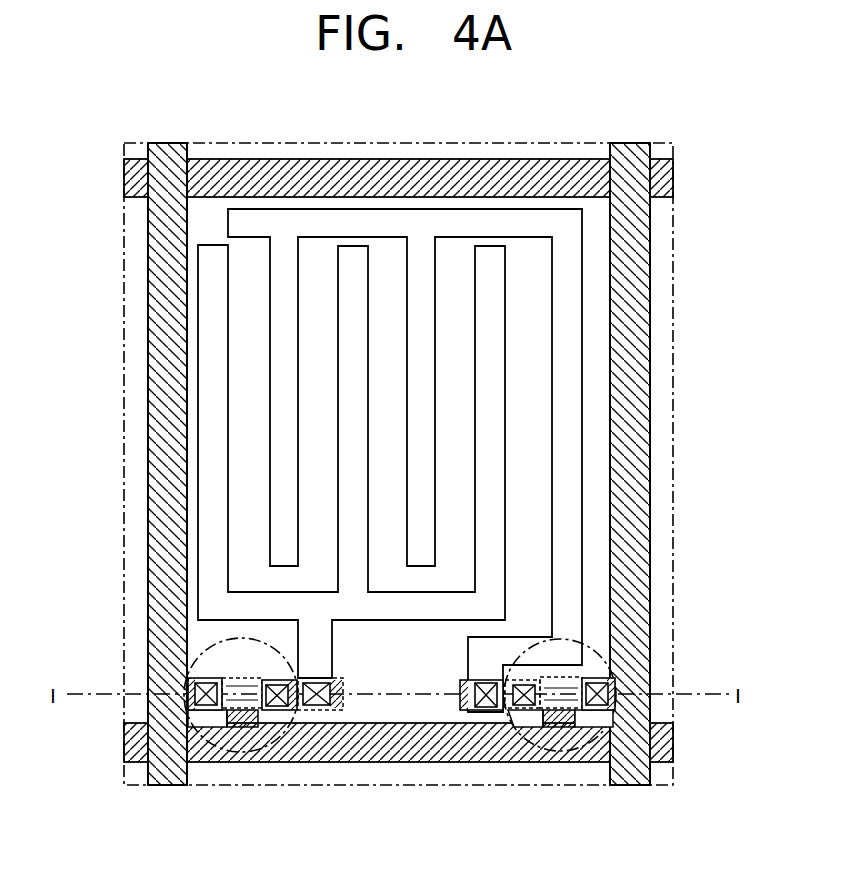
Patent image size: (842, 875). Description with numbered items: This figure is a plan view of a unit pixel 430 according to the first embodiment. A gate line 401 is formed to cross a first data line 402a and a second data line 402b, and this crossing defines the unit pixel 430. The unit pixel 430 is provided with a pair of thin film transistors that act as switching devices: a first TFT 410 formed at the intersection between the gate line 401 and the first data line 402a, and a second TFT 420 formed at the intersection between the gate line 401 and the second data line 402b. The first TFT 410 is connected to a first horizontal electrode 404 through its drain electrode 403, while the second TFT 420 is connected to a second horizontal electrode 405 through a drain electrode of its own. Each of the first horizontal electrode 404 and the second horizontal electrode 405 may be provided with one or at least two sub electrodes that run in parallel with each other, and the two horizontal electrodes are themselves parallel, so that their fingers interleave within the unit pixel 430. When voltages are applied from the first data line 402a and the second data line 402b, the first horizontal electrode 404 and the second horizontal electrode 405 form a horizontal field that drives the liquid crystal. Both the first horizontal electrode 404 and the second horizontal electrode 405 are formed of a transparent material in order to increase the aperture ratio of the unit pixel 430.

The gate line 401 is at (675, 742).
The first data line 402a is at (166, 777).
The second data line 402b is at (632, 777).
The drain electrode 403 is at (337, 720).
The first horizontal electrode 404 is at (208, 359).
The second horizontal electrode 405 is at (573, 373).
The first TFT 410 is at (238, 745).
The second TFT 420 is at (560, 745).
The unit pixel 430 is at (598, 458).